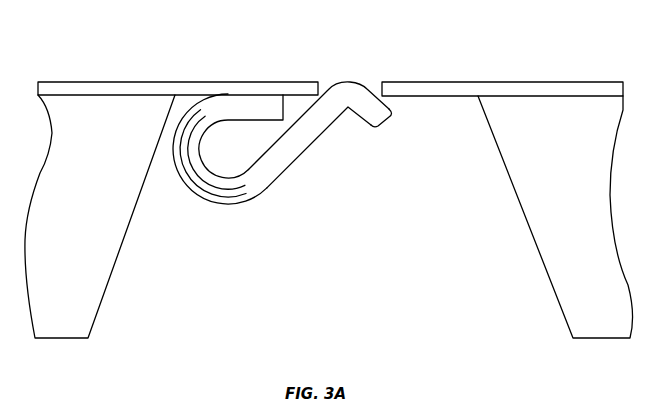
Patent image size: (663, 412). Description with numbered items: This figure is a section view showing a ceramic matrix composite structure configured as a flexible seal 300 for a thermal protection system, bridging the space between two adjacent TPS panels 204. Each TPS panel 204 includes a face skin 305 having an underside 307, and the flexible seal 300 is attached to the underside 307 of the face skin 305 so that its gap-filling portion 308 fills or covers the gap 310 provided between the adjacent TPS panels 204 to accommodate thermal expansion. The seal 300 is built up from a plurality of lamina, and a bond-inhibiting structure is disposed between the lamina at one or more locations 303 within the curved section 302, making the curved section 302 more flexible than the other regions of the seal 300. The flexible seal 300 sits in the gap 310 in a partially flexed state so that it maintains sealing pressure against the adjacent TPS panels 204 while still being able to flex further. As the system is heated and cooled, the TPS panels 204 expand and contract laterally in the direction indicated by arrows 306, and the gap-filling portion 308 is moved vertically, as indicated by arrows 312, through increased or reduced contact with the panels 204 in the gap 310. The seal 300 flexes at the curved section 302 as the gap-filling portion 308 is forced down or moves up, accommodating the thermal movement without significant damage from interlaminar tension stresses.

The TPS panel 204 is at (89, 205).
The flexible seal 300 is at (294, 138).
The curved section 302 is at (177, 174).
The locations 303 is at (223, 192).
The face skin 305 is at (557, 83).
The arrows 306 is at (207, 60).
The underside 307 is at (425, 97).
The gap-filling portion 308 is at (345, 83).
The gap 310 is at (372, 77).
The arrows 312 is at (355, 122).